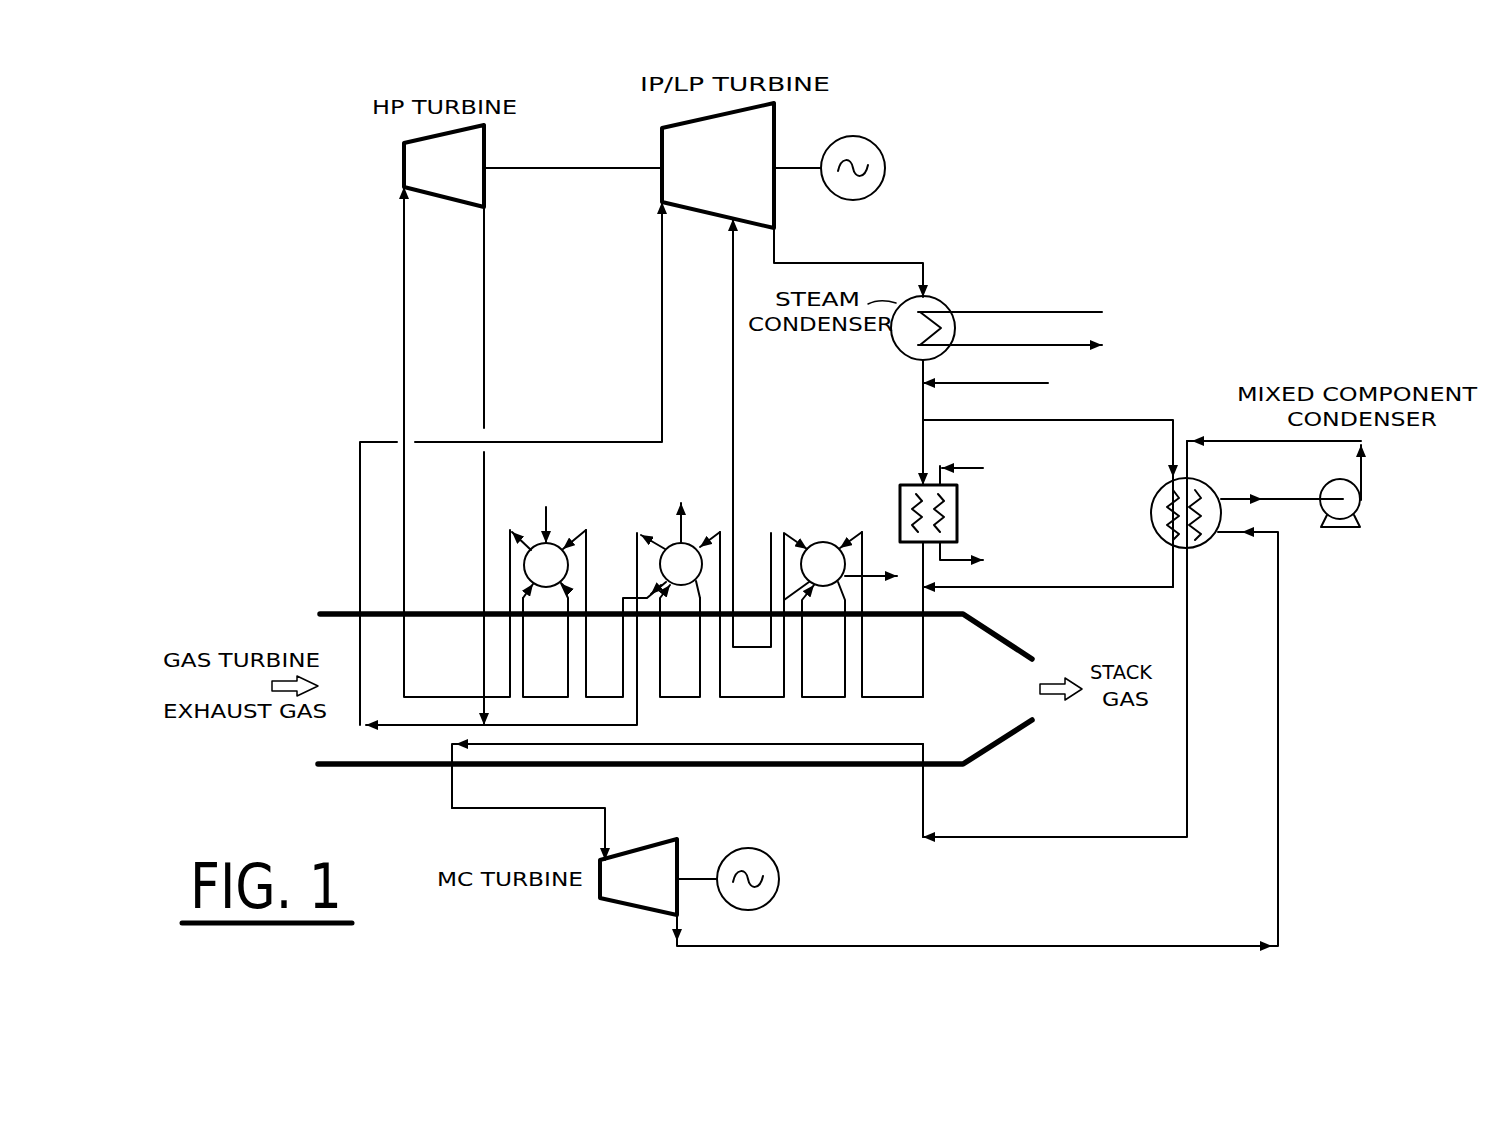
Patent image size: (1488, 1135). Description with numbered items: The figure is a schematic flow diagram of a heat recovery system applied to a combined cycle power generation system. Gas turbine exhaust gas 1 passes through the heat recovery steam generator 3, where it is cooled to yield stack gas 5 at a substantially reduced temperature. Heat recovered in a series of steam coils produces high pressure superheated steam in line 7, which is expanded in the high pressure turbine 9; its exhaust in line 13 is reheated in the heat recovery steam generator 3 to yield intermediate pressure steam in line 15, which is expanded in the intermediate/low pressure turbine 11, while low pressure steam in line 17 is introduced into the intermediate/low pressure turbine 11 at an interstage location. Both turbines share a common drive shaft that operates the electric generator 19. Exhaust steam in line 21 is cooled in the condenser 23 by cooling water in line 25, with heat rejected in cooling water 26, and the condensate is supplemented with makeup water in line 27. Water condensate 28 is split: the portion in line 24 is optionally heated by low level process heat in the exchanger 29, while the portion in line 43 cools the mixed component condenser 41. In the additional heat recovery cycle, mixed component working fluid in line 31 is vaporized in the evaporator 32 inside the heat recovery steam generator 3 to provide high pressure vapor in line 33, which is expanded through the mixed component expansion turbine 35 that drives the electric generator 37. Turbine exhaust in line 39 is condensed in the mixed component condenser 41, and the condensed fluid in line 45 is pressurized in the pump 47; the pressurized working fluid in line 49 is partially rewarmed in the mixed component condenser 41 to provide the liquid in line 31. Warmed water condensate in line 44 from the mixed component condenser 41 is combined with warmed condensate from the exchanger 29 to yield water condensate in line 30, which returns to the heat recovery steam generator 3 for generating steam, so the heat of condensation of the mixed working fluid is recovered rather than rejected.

The gas turbine exhaust gas 1 is at (318, 683).
The heat recovery steam generator 3 is at (338, 612).
The stack gas 5 is at (1052, 700).
The high pressure superheated steam line 7 is at (404, 328).
The high pressure turbine 9 is at (404, 165).
The intermediate/low pressure turbine 11 is at (662, 150).
The high pressure turbine exhaust line 13 is at (484, 352).
The intermediate pressure steam line 15 is at (662, 362).
The low pressure steam line 17 is at (733, 423).
The electric generator 19 is at (880, 150).
The exhaust steam line 21 is at (890, 263).
The condenser 23 is at (940, 298).
The water condensate line 24 is at (923, 443).
The cooling water line 25 is at (1008, 312).
The cooling water 26 is at (1080, 340).
The makeup water line 27 is at (1000, 383).
The water condensate 28 is at (923, 401).
The exchanger 29 is at (900, 489).
The water condensate line 30 is at (923, 600).
The mixed component working fluid line 31 is at (1187, 630).
The evaporator 32 is at (748, 744).
The high pressure vapor line 33 is at (452, 797).
The mixed component expansion turbine 35 is at (648, 845).
The electric generator 37 is at (750, 848).
The turbine exhaust line 39 is at (886, 946).
The mixed component condenser 41 is at (1151, 508).
The water condensate line 43 is at (1035, 421).
The warmed water condensate line 44 is at (1056, 587).
The condensed mixed working fluid line 45 is at (1272, 498).
The pump 47 is at (1360, 499).
The pressurized working fluid line 49 is at (1226, 441).